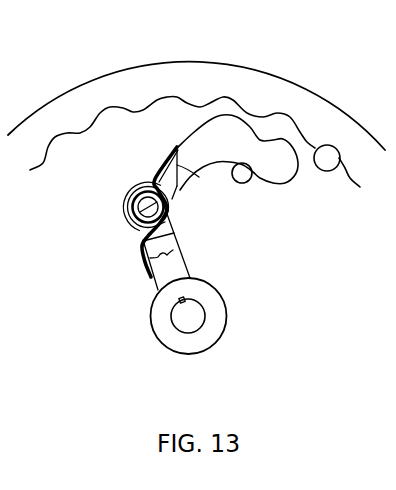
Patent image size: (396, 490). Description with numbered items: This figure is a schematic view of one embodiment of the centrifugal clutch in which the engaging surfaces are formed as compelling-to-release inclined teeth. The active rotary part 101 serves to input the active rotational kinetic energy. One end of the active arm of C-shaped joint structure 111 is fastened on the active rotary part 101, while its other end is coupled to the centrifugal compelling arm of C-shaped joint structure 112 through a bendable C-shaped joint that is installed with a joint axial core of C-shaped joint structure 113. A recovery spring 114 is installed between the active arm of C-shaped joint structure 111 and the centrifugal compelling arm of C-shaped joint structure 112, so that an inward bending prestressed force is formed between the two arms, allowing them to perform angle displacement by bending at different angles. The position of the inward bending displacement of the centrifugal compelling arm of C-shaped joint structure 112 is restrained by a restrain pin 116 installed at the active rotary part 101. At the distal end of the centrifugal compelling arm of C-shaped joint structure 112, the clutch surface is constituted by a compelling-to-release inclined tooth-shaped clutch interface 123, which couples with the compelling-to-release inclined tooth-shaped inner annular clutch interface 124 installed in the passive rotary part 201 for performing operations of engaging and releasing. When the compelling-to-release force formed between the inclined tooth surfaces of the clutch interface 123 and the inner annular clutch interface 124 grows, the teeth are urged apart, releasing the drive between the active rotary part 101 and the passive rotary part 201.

The active rotary part 101 is at (197, 318).
The active arm of C-shaped joint structure 111 is at (188, 267).
The centrifugal compelling arm of C-shaped joint structure 112 is at (200, 150).
The joint axial core of C-shaped joint structure 113 is at (143, 208).
The recovery spring 114 is at (148, 260).
The restrain pin 116 is at (243, 178).
The compelling-to-release inclined tooth-shaped clutch interface 123 is at (232, 117).
The compelling-to-release inclined tooth-shaped inner annular clutch interface 124 is at (343, 155).
The passive rotary part 201 is at (46, 134).